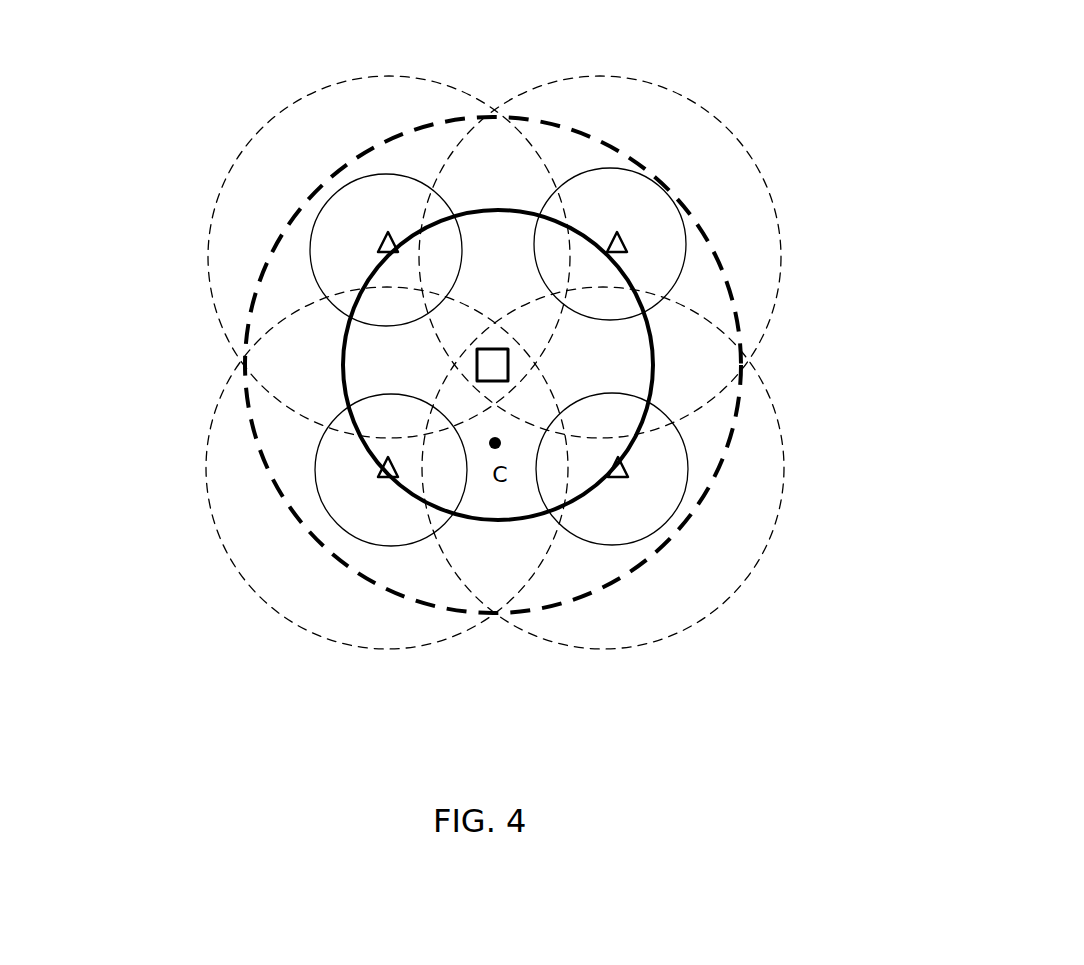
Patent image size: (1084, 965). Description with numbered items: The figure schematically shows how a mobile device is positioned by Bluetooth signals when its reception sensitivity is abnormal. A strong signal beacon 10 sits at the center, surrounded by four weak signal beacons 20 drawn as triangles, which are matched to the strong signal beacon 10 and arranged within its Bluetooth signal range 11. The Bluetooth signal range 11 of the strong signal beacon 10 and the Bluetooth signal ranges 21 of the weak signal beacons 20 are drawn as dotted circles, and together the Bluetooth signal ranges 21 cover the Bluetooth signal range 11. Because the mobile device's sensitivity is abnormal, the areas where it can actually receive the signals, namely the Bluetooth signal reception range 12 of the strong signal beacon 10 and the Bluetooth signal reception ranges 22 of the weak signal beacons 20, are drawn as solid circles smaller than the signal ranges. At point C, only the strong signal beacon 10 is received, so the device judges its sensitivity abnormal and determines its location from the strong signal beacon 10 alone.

The strong signal beacon 10 is at (648, 333).
The Bluetooth signal range 11 is at (733, 433).
The Bluetooth signal reception range 12 is at (508, 365).
The weak signal beacons 20 is at (378, 244).
The Bluetooth signal ranges 21 is at (213, 313).
The Bluetooth signal reception ranges 22 is at (310, 250).